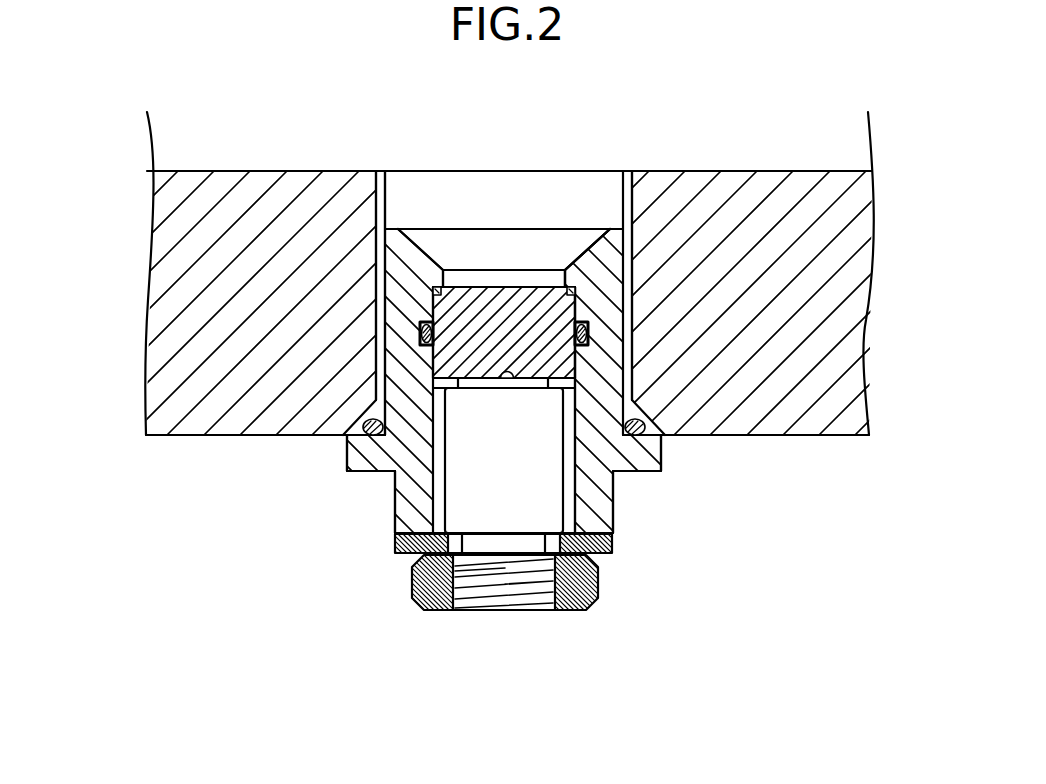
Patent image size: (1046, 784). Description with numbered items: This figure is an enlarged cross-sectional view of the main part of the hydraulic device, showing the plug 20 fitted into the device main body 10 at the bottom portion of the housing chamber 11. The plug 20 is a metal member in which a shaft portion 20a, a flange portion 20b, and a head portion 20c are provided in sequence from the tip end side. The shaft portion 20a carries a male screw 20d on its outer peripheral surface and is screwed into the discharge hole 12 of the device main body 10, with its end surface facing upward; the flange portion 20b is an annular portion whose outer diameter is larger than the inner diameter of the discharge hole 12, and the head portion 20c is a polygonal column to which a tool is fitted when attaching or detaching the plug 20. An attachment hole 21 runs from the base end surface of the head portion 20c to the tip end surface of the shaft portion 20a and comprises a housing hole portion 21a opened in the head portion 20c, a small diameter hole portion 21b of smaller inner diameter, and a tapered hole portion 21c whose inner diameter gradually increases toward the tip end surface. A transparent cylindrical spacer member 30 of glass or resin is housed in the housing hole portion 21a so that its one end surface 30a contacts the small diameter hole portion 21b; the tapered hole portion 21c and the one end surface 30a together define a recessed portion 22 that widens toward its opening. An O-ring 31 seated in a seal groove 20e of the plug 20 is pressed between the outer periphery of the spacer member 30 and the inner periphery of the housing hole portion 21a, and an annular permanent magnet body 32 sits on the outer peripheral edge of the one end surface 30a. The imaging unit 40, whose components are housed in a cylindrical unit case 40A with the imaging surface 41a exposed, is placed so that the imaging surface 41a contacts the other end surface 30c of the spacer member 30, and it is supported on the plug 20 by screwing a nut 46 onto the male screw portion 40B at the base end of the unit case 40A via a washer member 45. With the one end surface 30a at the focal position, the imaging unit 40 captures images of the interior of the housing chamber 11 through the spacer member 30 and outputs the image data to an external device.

The device main body 10 is at (848, 281).
The housing chamber 11 is at (818, 147).
The discharge hole 12 is at (630, 207).
The plug 20 is at (338, 486).
The shaft portion 20a is at (394, 289).
The flange portion 20b is at (368, 456).
The head portion 20c is at (403, 517).
The male screw 20d is at (382, 359).
The seal groove 20e is at (419, 331).
The attachment hole 21 is at (620, 403).
The housing hole portion 21a is at (570, 400).
The small diameter hole portion 21b is at (567, 280).
The tapered hole portion 21c is at (571, 264).
The recessed portion 22 is at (527, 245).
The spacer member 30 is at (488, 293).
The one end surface 30a is at (458, 275).
The other end surface 30c is at (612, 452).
The O-ring 31 is at (590, 331).
The magnet body 32 is at (568, 283).
The imaging unit 40 is at (519, 515).
The unit case 40A is at (563, 511).
The male screw portion 40B is at (470, 592).
The imaging surface 41a is at (507, 382).
The washer member 45 is at (398, 545).
The nut 46 is at (412, 585).